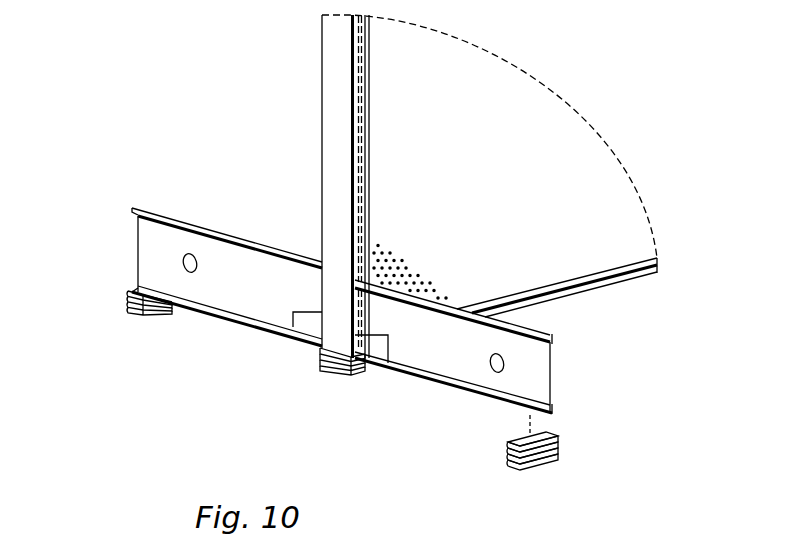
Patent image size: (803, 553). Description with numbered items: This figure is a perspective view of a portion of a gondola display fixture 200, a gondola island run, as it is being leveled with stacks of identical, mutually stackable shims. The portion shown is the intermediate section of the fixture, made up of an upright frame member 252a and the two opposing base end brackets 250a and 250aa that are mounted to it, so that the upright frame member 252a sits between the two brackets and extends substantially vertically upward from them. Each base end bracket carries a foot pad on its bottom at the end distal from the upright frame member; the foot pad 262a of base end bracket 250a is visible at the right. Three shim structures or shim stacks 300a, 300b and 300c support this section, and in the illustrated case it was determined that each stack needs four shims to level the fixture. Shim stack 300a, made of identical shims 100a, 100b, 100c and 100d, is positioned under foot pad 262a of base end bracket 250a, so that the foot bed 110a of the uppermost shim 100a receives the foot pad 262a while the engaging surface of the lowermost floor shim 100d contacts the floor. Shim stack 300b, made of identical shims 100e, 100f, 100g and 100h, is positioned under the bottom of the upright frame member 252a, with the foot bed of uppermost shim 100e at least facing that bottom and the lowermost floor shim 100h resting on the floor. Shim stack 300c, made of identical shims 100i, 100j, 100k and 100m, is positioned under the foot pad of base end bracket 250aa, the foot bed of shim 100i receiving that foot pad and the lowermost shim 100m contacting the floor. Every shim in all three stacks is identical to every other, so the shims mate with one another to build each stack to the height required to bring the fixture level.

The gondola display fixture 200 is at (202, 88).
The upright frame member 252a is at (338, 125).
The base end bracket 250aa is at (252, 260).
The base end bracket 250a is at (448, 372).
The foot pad 262a is at (530, 413).
The foot bed 110a is at (510, 442).
The shim structure or shim stack 300a is at (497, 470).
The shim 100a is at (560, 440).
The shim 100b is at (560, 445).
The shim 100c is at (558, 448).
The shim 100d is at (560, 457).
The shim structure or shim stack 300b is at (338, 383).
The shim 100e is at (320, 349).
The shim 100f is at (320, 355).
The shim 100g is at (320, 361).
The shim 100h is at (320, 368).
The shim structure or shim stack 300c is at (162, 323).
The shim 100i is at (128, 293).
The shim 100j is at (128, 297).
The shim 100k is at (128, 306).
The shim 100m is at (128, 312).